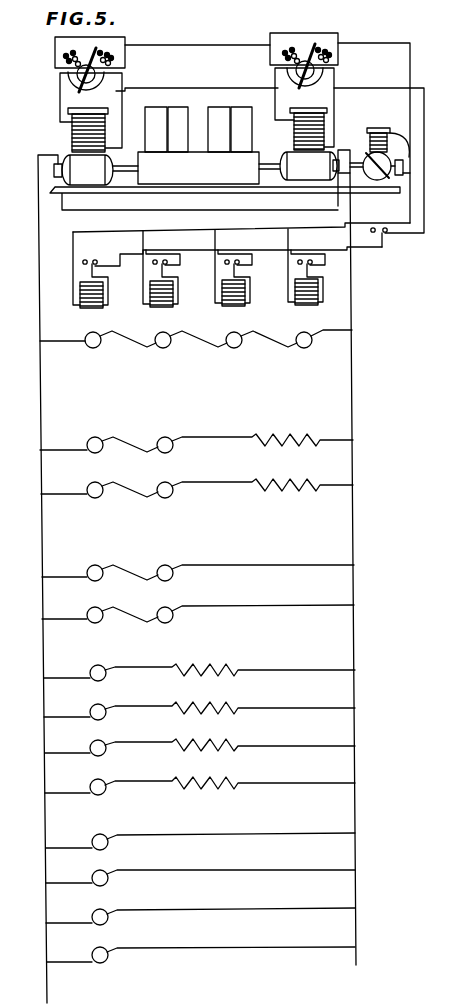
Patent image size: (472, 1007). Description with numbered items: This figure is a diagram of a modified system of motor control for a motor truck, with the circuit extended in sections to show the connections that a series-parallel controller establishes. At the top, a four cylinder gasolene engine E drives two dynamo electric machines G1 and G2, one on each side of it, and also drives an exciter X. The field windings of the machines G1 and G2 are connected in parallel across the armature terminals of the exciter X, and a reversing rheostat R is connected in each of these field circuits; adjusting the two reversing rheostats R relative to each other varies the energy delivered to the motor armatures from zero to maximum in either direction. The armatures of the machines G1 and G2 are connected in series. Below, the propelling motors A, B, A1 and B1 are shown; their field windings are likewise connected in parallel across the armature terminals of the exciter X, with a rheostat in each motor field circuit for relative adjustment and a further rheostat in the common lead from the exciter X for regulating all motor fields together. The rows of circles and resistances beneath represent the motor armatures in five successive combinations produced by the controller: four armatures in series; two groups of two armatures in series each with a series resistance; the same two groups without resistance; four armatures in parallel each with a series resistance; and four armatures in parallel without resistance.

The reversing rheostat R is at (239, 133).
The dynamo electric machine G1 is at (96, 170).
The four cylinder gasolene engine E is at (209, 145).
The dynamo electric machine G2 is at (321, 178).
The exciter X is at (386, 165).
The propelling motor A is at (120, 351).
The propelling motor B is at (191, 350).
The propelling motor A1 is at (261, 349).
The propelling motor B1 is at (324, 348).